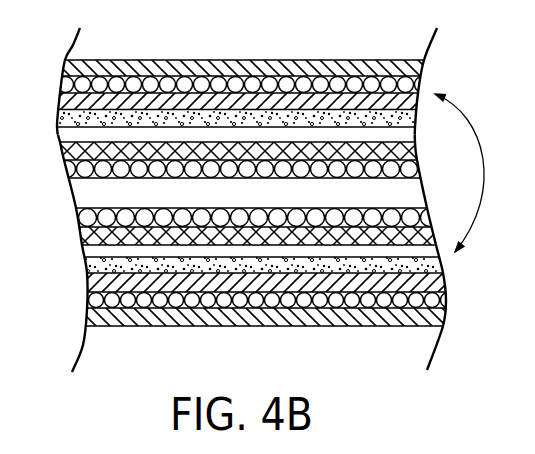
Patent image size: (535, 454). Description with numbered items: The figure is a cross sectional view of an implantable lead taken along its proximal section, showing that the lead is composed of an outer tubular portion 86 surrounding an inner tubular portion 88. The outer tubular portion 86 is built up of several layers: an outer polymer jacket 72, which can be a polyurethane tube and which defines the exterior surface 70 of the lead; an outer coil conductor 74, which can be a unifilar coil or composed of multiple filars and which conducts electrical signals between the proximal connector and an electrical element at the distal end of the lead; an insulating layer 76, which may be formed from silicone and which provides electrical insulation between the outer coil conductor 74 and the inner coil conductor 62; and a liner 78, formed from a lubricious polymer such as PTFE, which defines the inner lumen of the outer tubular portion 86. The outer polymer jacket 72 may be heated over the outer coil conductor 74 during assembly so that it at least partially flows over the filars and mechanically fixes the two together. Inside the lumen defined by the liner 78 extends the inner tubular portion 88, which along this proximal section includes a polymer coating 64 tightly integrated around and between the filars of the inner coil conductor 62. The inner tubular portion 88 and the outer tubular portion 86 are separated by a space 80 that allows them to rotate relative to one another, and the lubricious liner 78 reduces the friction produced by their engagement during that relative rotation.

The exterior surface 70 is at (385, 60).
The outer polymer jacket 72 is at (345, 60).
The outer coil conductor 74 is at (310, 87).
The insulating layer 76 is at (298, 97).
The liner 78 is at (216, 112).
The space 80 is at (182, 135).
The inner coil conductor 62 is at (82, 143).
The polymer coating 64 is at (158, 143).
The inner tubular portion 88 is at (231, 122).
The outer tubular portion 86 is at (473, 173).